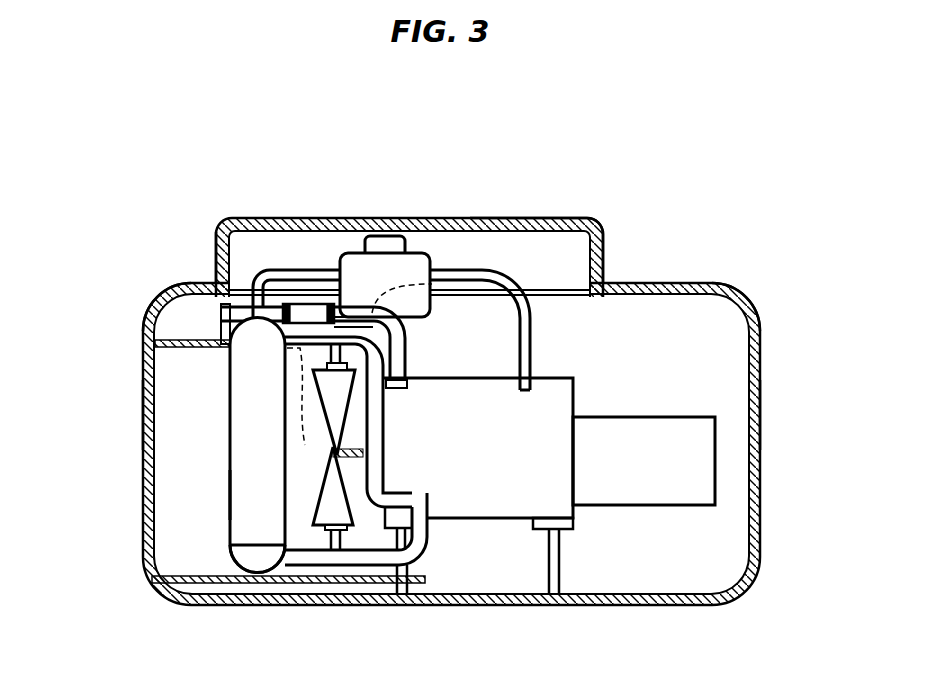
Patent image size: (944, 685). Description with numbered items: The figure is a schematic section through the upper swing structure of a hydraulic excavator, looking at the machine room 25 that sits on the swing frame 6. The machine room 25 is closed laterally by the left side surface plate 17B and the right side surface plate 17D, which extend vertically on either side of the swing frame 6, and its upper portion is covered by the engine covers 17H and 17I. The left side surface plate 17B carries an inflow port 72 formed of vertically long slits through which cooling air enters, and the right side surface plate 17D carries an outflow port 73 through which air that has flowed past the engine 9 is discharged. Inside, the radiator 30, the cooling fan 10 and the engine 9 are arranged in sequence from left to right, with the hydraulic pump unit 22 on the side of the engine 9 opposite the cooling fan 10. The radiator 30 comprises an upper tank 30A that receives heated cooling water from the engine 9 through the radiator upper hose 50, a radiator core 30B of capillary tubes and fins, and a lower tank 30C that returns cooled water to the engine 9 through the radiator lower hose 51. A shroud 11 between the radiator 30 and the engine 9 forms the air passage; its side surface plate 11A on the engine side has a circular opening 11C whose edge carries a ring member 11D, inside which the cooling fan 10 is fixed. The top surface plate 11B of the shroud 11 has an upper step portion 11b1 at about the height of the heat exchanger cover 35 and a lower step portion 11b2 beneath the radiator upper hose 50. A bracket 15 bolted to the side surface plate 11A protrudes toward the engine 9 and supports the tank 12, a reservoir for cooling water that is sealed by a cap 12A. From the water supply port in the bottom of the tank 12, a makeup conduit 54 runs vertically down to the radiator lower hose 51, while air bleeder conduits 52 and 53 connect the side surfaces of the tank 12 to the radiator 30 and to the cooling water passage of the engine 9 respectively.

The swing frame 6 is at (703, 607).
The engine 9 is at (482, 495).
The cooling fan 10 is at (325, 520).
The shroud 11 is at (315, 297).
The side surface plate 11A is at (353, 330).
The top surface plate 11B is at (288, 303).
The opening 11C is at (407, 353).
The ring member 11D is at (340, 537).
The upper step portion 11b1 is at (303, 308).
The lower step portion 11b2 is at (306, 408).
The tank 12 is at (418, 252).
The cap 12A is at (383, 237).
The bracket 15 is at (403, 322).
The left side surface plate 17B is at (147, 327).
The right side surface plate 17D is at (763, 330).
The engine cover 17H is at (357, 222).
The engine cover 17I is at (500, 220).
The hydraulic pump unit 22 is at (623, 427).
The machine room 25 is at (543, 334).
The radiator 30 is at (221, 428).
The upper tank 30A is at (218, 342).
The radiator core 30B is at (230, 497).
The lower tank 30C is at (230, 562).
The heat exchanger cover 35 is at (220, 268).
The radiator upper hose 50 is at (352, 367).
The radiator lower hose 51 is at (420, 557).
The air bleeder conduit 52 is at (237, 308).
The air bleeder conduit 53 is at (530, 360).
The makeup conduit 54 is at (377, 507).
The inflow port 72 is at (143, 413).
The outflow port 73 is at (763, 415).